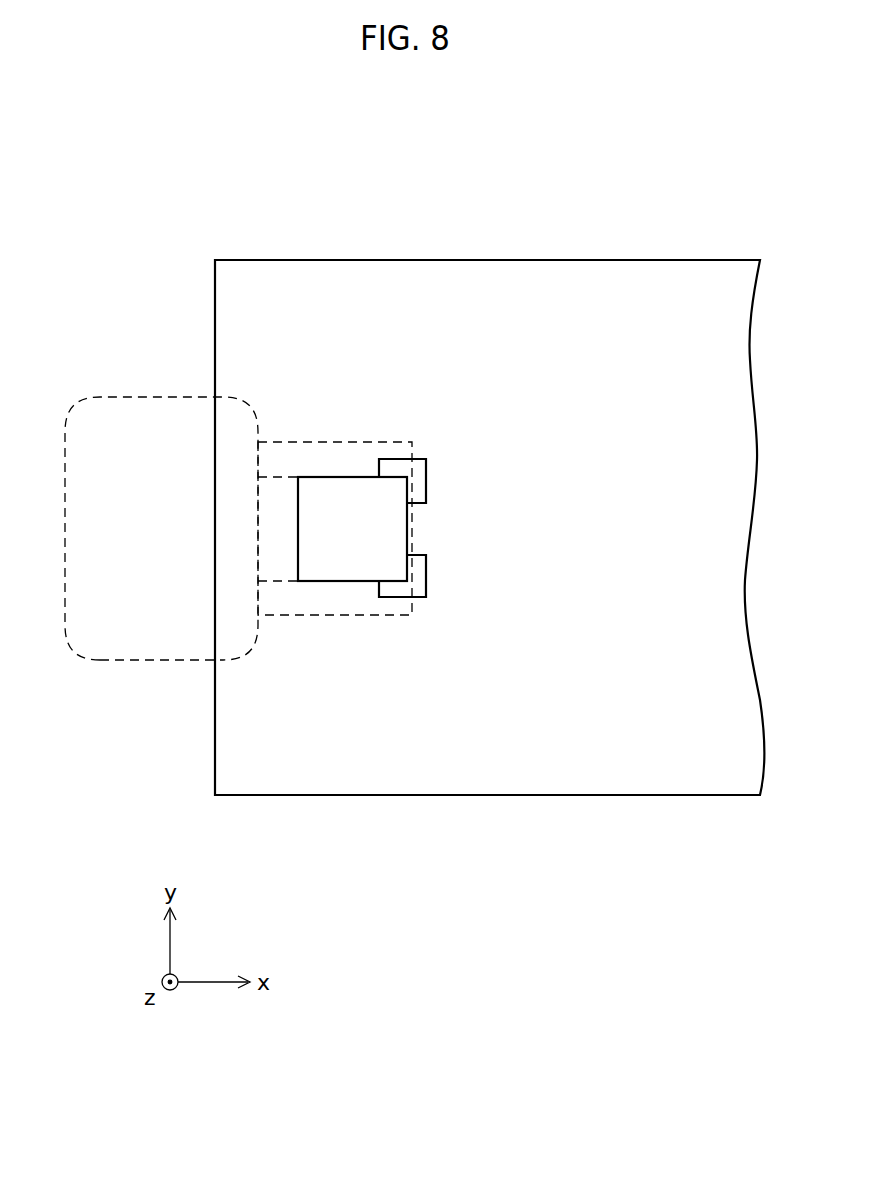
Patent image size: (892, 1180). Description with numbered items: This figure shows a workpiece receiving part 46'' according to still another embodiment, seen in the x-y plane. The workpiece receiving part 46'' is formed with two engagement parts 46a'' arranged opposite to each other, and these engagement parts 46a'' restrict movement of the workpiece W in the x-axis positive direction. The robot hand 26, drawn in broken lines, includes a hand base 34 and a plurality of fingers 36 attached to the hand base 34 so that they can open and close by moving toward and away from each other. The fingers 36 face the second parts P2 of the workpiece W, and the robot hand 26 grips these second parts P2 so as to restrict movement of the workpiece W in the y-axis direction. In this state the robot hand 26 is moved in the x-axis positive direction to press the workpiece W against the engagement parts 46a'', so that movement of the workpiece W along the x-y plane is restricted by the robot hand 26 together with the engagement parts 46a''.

The workpiece receiving part 46'' is at (490, 494).
The engagement parts 46a'' is at (451, 528).
The robot hand 26 is at (84, 378).
The hand base 34 is at (125, 645).
The fingers 36 is at (388, 442).
The second part P2 is at (332, 477).
The workpiece W is at (393, 528).